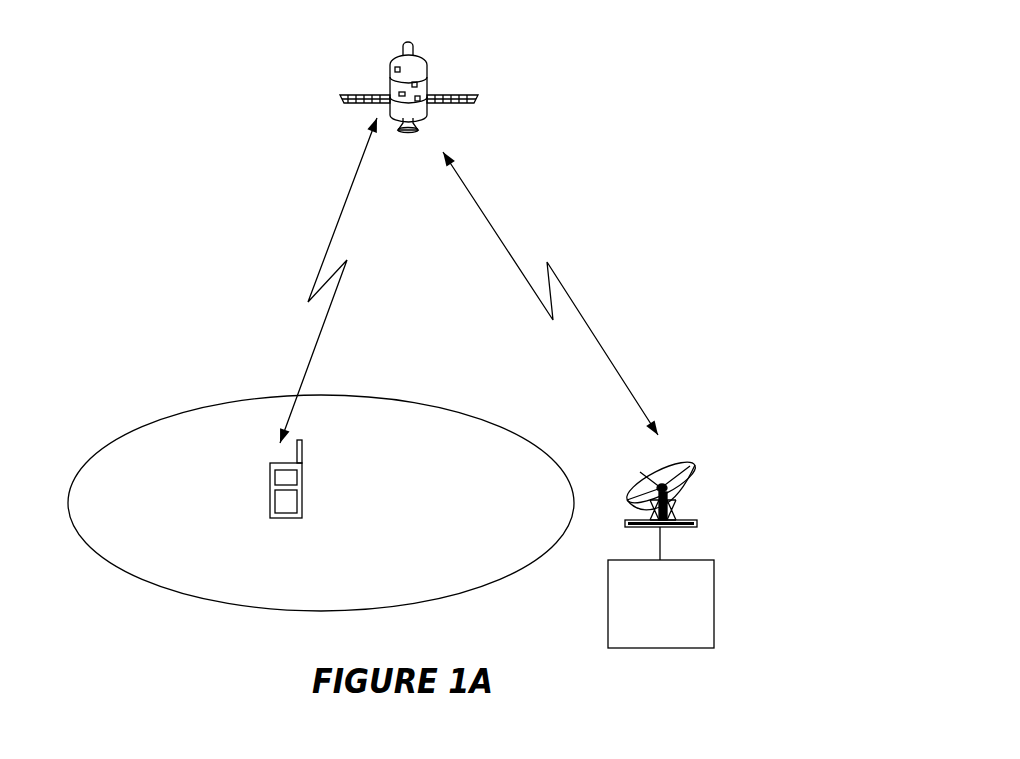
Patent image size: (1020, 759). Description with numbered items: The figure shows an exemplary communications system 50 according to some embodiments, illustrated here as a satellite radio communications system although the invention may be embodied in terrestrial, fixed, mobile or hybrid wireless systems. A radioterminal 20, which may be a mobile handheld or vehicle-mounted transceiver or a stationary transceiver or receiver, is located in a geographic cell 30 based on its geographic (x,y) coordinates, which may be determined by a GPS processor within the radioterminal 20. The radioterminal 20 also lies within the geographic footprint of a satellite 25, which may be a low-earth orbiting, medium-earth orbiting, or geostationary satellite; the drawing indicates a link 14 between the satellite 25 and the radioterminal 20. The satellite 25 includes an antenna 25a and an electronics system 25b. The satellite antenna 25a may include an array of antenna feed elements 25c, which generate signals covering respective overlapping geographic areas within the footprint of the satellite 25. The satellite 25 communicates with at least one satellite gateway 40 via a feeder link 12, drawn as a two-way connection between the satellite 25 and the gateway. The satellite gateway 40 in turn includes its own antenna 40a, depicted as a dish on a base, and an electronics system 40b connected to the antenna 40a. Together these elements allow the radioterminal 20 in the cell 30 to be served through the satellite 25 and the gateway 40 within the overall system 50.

The feeder link 12 is at (507, 247).
The communication link between satellite and mobile device 14 is at (327, 248).
The radioterminal 20 is at (272, 487).
The satellite 25 is at (457, 45).
The antenna 25a is at (447, 93).
The electronics system 25b is at (393, 68).
The antenna feed elements 25c is at (350, 103).
The geographic cell 30 is at (383, 583).
The satellite gateway 40 is at (730, 515).
The antenna 40a is at (677, 473).
The electronics system 40b is at (643, 614).
The system 50 is at (625, 235).